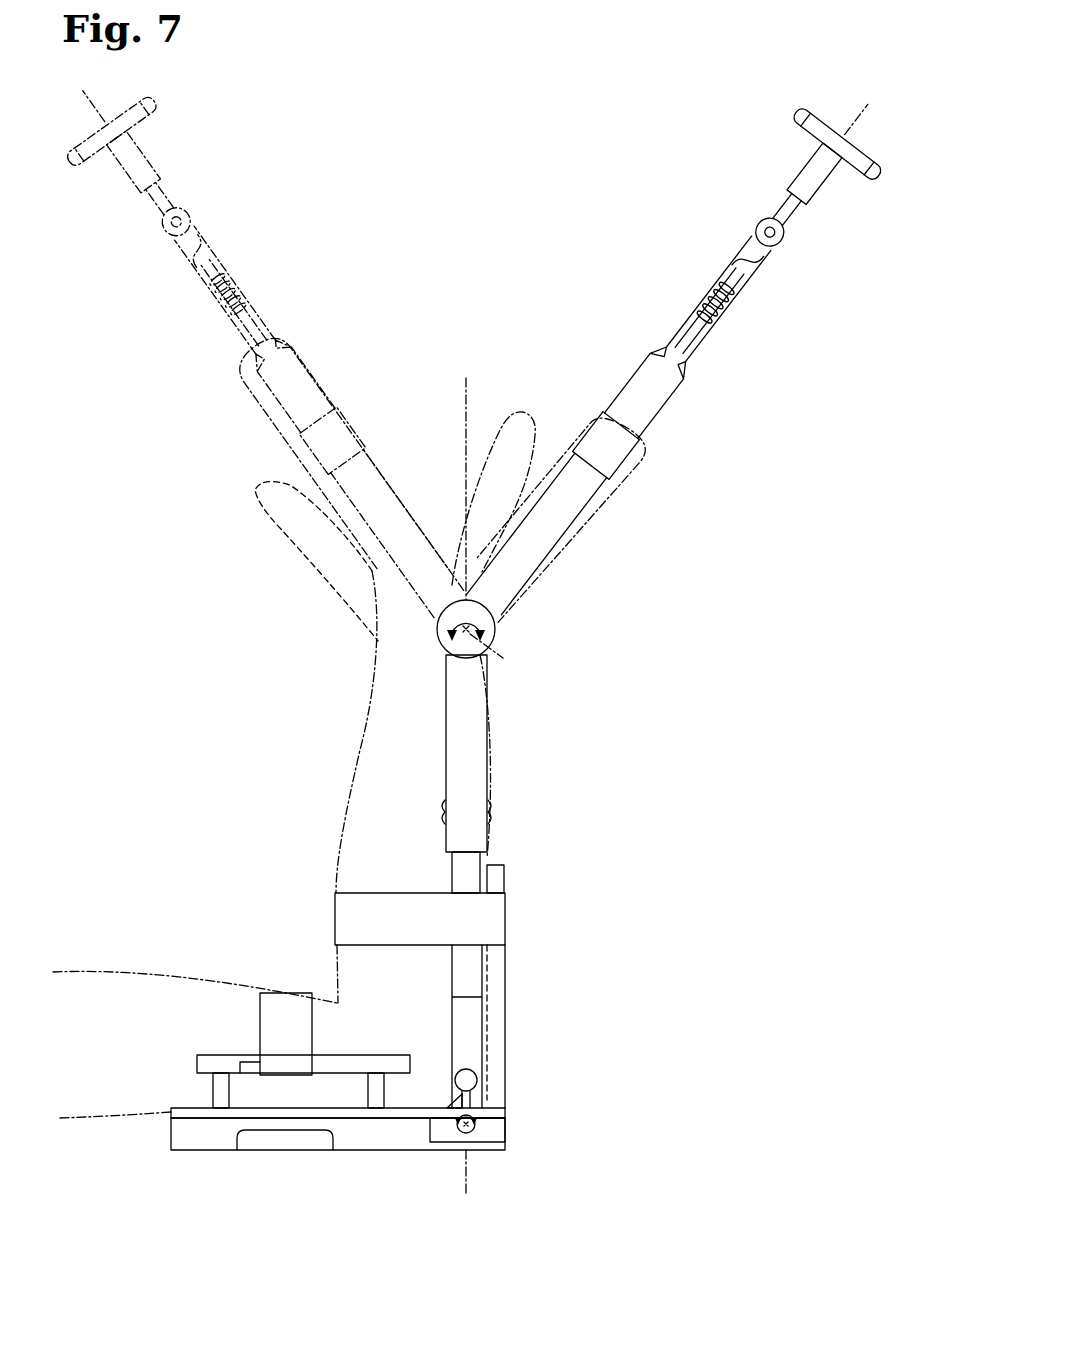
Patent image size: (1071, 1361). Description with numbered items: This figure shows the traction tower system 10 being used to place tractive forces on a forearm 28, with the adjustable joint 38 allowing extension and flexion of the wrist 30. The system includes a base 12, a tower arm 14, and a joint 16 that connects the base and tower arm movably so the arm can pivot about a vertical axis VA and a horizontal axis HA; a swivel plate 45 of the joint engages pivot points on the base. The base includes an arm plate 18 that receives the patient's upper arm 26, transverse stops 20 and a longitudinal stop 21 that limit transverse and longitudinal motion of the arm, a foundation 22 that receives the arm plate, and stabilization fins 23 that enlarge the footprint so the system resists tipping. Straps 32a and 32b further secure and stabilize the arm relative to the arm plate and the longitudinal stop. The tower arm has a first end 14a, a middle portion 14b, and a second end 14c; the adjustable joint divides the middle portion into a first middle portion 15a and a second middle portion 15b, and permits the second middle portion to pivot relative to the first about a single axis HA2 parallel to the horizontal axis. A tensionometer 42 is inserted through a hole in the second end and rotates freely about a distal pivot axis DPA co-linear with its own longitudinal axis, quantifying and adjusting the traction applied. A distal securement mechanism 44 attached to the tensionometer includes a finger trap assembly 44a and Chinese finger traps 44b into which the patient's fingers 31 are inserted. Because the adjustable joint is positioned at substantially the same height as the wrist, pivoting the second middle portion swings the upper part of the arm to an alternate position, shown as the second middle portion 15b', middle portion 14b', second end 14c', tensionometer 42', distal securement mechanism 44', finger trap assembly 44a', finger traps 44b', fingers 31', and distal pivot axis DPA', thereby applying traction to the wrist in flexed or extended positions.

The traction tower system 10 is at (694, 40).
The base 12 is at (135, 1030).
The tower arm 14 is at (500, 238).
The first end 14a is at (487, 1038).
The middle portion 14b is at (521, 523).
The middle portion (alternate position) 14b' is at (371, 545).
The second end 14c is at (757, 215).
The second end (alternate position) 14c' is at (212, 211).
The first middle portion 15a is at (488, 765).
The second middle portion 15b is at (555, 546).
The second middle portion (alternate position) 15b' is at (353, 518).
The joint 16 is at (605, 1092).
The arm plate 18 is at (170, 1113).
The transverse stops 20 is at (215, 1060).
The longitudinal stop 21 is at (506, 890).
The foundation 22 is at (170, 1131).
The stabilization fins 23 is at (235, 1150).
The upper arm 26 is at (177, 970).
The forearm 28 is at (378, 698).
The wrist 30 is at (372, 730).
The fingers 31 is at (620, 471).
The fingers (alternate position) 31' is at (351, 432).
The strap 32a is at (282, 995).
The strap 32b is at (333, 924).
The adjustable joint 38 is at (437, 630).
The tensionometer 42 is at (802, 176).
The tensionometer (alternate position) 42' is at (194, 153).
The distal securement mechanism 44 is at (765, 299).
The distal securement mechanism (alternate position) 44' is at (178, 285).
The finger trap assembly 44a is at (721, 302).
The finger trap assembly (alternate position) 44a' is at (238, 292).
The Chinese finger traps 44b is at (666, 392).
The Chinese finger traps (alternate position) 44b' is at (273, 384).
The swivel plate 45 is at (506, 1140).
The distal pivot axis DPA is at (843, 98).
The distal pivot axis (alternate position) DPA' is at (128, 94).
The horizontal axis HA is at (478, 1104).
The adjustable joint pivot axis HA2 is at (511, 657).
The vertical axis VA is at (476, 1190).